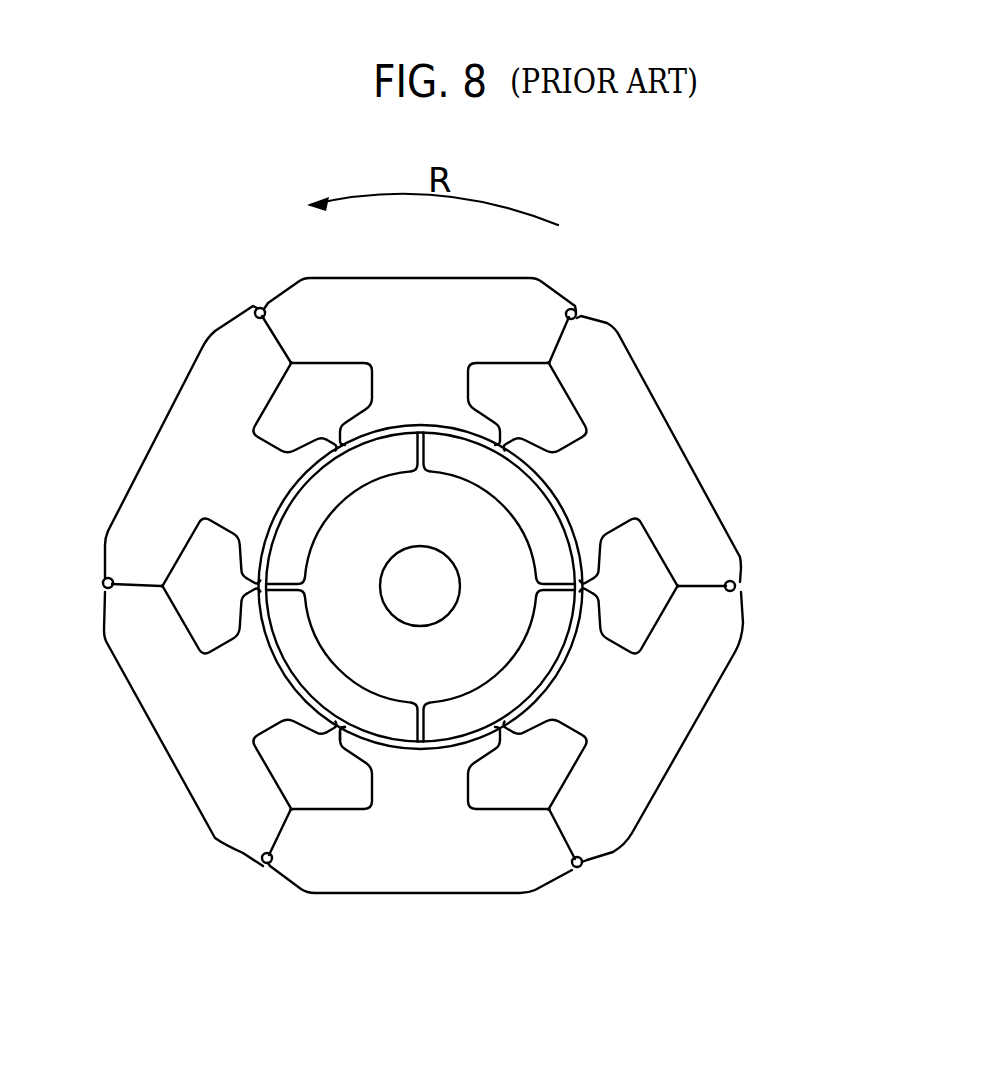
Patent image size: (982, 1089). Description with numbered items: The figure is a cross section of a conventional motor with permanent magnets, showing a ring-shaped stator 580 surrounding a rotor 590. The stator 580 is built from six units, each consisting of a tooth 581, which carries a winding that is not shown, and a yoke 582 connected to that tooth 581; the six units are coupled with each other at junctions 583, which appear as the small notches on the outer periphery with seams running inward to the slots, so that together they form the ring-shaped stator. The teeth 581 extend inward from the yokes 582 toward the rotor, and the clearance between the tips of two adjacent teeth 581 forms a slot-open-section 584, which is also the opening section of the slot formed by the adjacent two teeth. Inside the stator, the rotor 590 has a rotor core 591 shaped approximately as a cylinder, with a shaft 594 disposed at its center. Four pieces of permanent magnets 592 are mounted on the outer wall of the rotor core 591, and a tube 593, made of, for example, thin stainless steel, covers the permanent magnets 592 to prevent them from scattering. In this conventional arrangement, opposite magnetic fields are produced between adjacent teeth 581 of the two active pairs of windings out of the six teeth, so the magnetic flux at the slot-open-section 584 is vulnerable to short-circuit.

The stator 580 is at (662, 402).
The teeth 581 is at (597, 502).
The yokes 582 is at (708, 537).
The junctions 583 is at (707, 592).
The slot-open-section 584 is at (590, 590).
The rotor 590 is at (287, 497).
The rotor core 591 is at (388, 658).
The permanent magnets 592 is at (457, 730).
The tube 593 is at (503, 730).
The shaft 594 is at (410, 596).